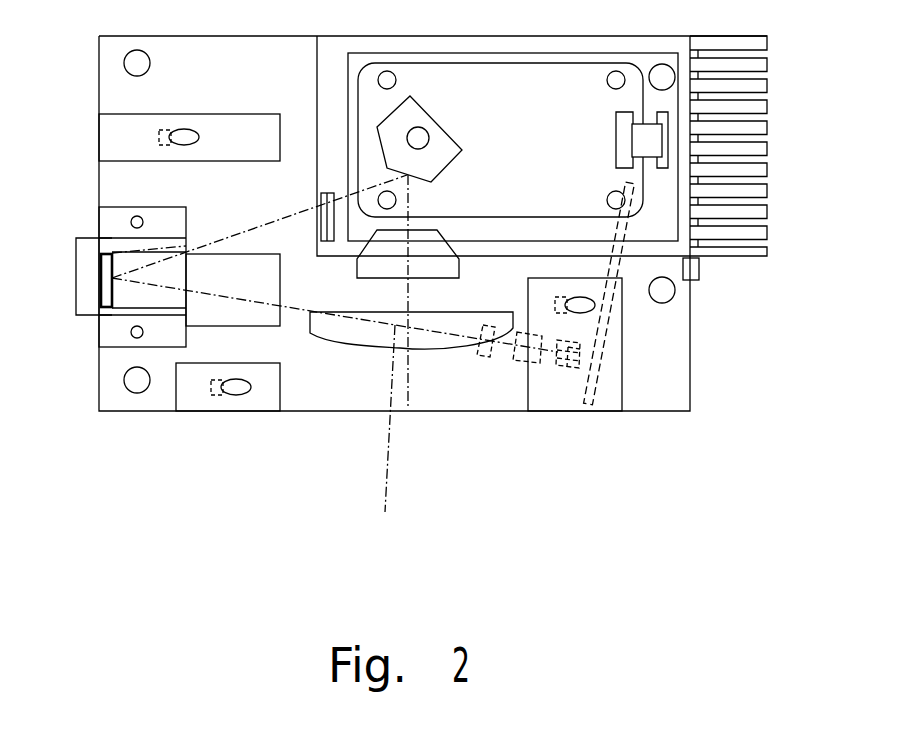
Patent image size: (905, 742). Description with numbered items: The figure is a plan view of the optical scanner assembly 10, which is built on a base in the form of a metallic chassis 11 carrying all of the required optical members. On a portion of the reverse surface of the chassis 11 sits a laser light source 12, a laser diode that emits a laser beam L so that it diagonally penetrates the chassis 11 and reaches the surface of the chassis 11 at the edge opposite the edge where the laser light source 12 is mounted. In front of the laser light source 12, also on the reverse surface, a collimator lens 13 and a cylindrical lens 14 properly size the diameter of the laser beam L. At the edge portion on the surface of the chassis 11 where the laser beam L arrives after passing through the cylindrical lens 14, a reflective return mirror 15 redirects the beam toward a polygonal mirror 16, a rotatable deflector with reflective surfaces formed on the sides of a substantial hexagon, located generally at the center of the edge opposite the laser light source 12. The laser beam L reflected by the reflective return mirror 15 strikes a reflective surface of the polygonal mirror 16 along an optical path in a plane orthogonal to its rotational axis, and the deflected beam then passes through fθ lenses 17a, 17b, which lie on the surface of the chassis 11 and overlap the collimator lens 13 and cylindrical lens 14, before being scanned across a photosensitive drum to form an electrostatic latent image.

The optical scanner assembly 10 is at (202, 475).
The metallic chassis 11 is at (668, 326).
The laser light source 12 is at (566, 372).
The collimator lens 13 is at (530, 365).
The cylindrical lens 14 is at (485, 360).
The reflective return mirror 15 is at (103, 267).
The polygonal mirror 16 is at (435, 115).
The fθ lens 17a is at (432, 245).
The fθ lens 17b is at (365, 336).
The laser beam L is at (335, 361).